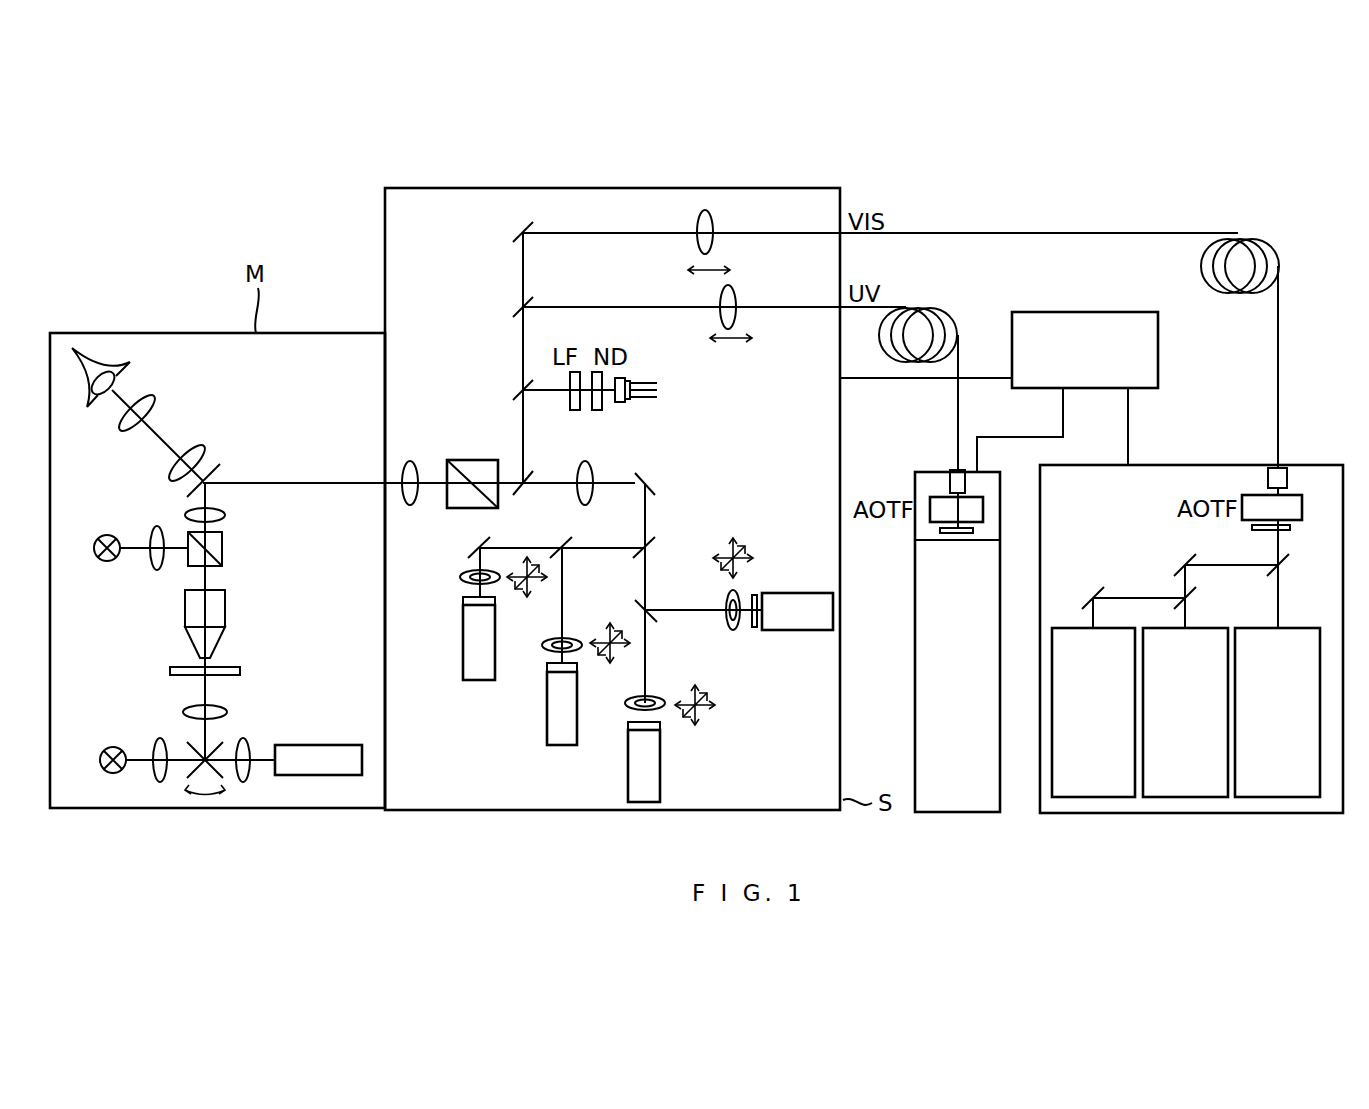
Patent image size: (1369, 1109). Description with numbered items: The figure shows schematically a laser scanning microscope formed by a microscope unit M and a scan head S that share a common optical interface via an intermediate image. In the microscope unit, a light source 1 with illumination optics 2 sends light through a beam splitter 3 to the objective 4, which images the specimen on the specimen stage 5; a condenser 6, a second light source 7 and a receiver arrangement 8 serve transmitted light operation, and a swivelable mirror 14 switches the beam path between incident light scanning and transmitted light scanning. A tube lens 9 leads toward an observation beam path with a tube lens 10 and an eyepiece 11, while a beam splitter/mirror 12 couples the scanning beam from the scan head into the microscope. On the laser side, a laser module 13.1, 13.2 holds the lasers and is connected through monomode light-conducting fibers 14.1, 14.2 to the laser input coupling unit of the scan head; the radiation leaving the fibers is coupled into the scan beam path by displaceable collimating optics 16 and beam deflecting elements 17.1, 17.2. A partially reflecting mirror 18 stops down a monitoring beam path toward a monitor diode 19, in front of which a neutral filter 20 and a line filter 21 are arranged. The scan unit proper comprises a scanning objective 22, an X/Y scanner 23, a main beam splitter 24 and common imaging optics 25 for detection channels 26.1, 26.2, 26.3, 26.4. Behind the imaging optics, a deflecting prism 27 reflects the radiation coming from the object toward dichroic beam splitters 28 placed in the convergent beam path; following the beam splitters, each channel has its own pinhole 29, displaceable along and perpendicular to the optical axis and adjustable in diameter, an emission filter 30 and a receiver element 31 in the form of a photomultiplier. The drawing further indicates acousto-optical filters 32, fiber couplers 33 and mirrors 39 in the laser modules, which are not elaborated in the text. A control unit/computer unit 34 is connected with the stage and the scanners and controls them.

The light source 1 is at (107, 535).
The illumination optics 2 is at (150, 565).
The beam splitter 3 is at (223, 548).
The objective 4 is at (226, 598).
The specimen stage 5 is at (241, 668).
The condenser 6 is at (228, 708).
The light source 7 is at (100, 745).
The receiver arrangement 8 is at (340, 745).
The tube lens 9 is at (225, 515).
The tube lens 10 is at (200, 460).
The eyepiece 11 is at (157, 402).
The beam splitter/mirror 12 is at (222, 465).
The laser module 13.1 is at (915, 642).
The laser module 13.2 is at (1160, 465).
The swivelable mirror 14 is at (215, 750).
The monomode light-conducting fiber 14.1 is at (885, 306).
The monomode light-conducting fiber 14.2 is at (1023, 232).
The collimating optics 16 is at (713, 225).
The beam deflecting element 17.1 is at (513, 310).
The beam deflecting element 17.2 is at (513, 235).
The partially reflecting mirror 18 is at (518, 388).
The monitor diode 19 is at (650, 400).
The neutral filter 20 is at (597, 410).
The line filter 21 is at (575, 410).
The scanning objective 22 is at (415, 462).
The X/Y scanner 23 is at (445, 505).
The main beam splitter 24 is at (520, 492).
The imaging optics 25 is at (592, 497).
The detection channel 26.1 is at (648, 670).
The detection channel 26.2 is at (563, 598).
The detection channel 26.3 is at (470, 556).
The detection channel 26.4 is at (680, 607).
The deflecting prism 27 is at (657, 490).
The dichroic beam splitter 28 is at (568, 542).
The pinhole 29 is at (465, 580).
The emission filter 30 is at (462, 603).
The receiver element 31 is at (462, 677).
The acousto-optical tunable filter 32 is at (930, 520).
The fiber coupler 33 is at (938, 470).
The control unit/computer unit 34 is at (1112, 312).
The mirror 39 is at (1185, 562).